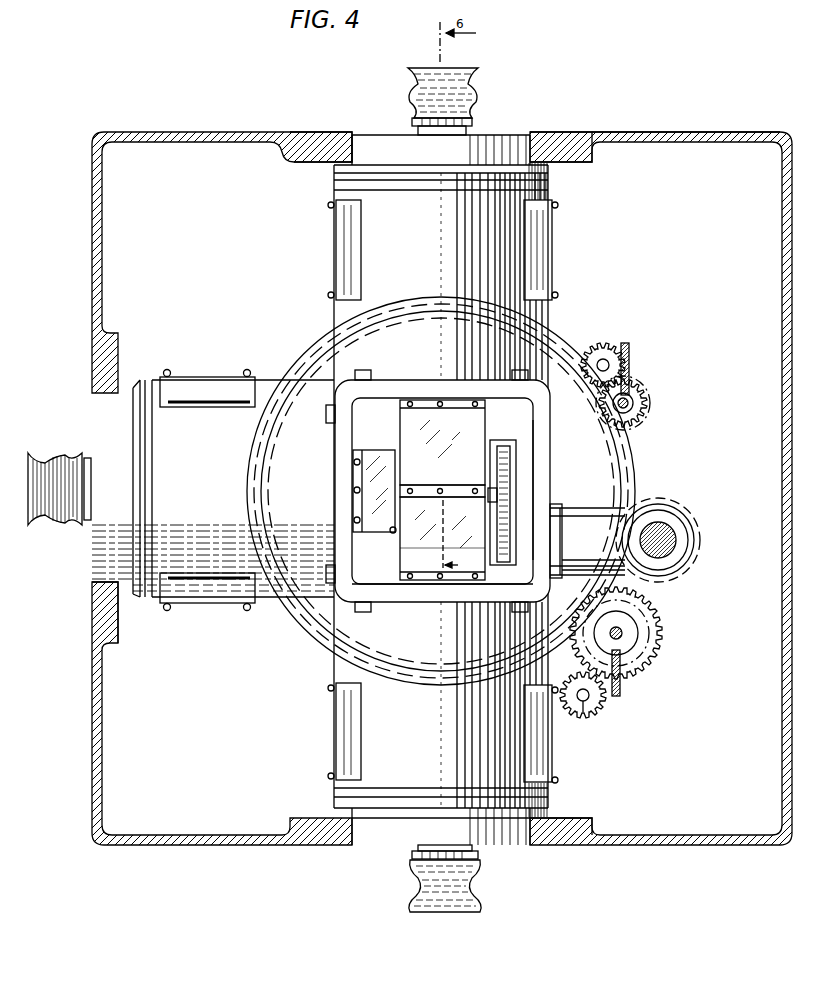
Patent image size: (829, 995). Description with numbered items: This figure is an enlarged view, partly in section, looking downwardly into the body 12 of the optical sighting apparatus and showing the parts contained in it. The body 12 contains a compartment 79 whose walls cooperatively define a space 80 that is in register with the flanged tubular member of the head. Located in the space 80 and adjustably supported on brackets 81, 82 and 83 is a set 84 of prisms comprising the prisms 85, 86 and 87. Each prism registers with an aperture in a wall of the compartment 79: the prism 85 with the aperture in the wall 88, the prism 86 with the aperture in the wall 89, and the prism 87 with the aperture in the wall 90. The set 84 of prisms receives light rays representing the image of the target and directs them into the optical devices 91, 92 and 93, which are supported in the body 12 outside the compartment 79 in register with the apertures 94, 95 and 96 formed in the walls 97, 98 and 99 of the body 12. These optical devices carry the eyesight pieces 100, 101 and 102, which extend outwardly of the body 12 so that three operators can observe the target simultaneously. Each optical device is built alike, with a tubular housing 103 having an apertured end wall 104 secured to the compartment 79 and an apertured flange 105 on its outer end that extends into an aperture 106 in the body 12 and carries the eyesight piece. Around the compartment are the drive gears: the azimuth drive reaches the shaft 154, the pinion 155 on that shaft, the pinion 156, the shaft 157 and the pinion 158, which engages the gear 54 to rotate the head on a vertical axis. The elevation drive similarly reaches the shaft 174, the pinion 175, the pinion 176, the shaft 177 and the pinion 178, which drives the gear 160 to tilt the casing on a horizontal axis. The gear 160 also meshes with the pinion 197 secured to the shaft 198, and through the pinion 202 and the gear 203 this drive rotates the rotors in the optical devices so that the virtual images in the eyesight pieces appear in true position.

The body 12 is at (648, 138).
The gear 54 is at (622, 482).
The compartment 79 is at (540, 466).
The space 80 is at (540, 406).
The bracket 81 is at (488, 452).
The bracket 82 is at (398, 548).
The bracket 83 is at (367, 450).
The set of prisms 84 is at (394, 538).
The prism 85 is at (470, 434).
The prism 86 is at (418, 554).
The prism 87 is at (374, 462).
The wall 88 is at (388, 384).
The wall 89 is at (415, 600).
The wall 90 is at (338, 510).
The optical device 91 is at (556, 202).
The optical device 92 is at (553, 789).
The optical device 93 is at (262, 378).
The aperture 94 is at (531, 140).
The aperture 95 is at (532, 847).
The aperture 96 is at (93, 578).
The wall 97 is at (574, 140).
The wall 98 is at (586, 848).
The wall 99 is at (94, 630).
The eyesight piece 100 is at (472, 100).
The eyesight piece 101 is at (480, 890).
The eyesight piece 102 is at (66, 522).
The tubular housing 103 is at (527, 268).
The apertured end wall 104 is at (420, 383).
The apertured flange 105 is at (503, 140).
The aperture 106 is at (346, 132).
The shaft 154 is at (605, 360).
The pinion 155 is at (600, 346).
The pinion 156 is at (646, 396).
The shaft 157 is at (627, 398).
The pinion 158 is at (651, 404).
The gear 160 is at (630, 494).
The shaft 174 is at (584, 714).
The pinion 175 is at (604, 704).
The pinion 176 is at (640, 598).
The shaft 177 is at (620, 648).
The pinion 178 is at (650, 634).
The pinion 197 is at (672, 508).
The shaft 198 is at (684, 526).
The pinion 202 is at (510, 520).
The gear 203 is at (506, 479).